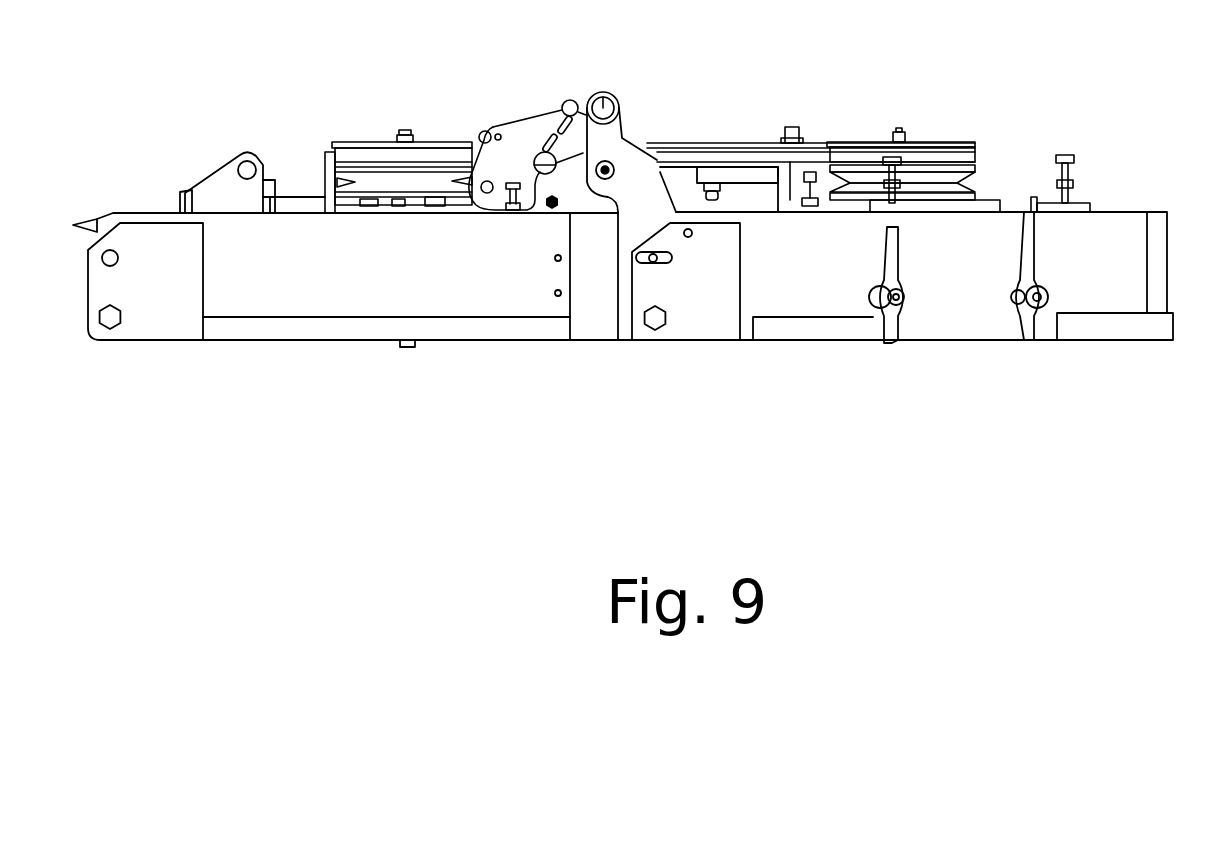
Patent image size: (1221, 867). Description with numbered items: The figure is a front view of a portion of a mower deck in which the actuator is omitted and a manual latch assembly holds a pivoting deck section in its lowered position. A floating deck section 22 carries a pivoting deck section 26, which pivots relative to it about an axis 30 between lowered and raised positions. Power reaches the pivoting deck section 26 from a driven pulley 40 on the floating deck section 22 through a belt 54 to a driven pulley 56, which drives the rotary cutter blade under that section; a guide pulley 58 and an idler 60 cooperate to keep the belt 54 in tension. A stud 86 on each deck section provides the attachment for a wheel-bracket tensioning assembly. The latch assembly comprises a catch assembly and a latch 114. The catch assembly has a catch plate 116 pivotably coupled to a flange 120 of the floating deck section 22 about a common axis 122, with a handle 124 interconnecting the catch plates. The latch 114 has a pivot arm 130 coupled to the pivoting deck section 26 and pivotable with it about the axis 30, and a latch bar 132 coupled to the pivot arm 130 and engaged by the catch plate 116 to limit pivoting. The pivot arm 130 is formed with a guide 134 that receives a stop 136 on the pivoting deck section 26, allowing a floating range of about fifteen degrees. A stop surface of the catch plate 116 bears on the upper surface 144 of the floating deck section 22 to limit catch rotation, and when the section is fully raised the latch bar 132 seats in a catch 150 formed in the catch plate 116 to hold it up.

The floating deck section 22 is at (250, 365).
The pivoting deck section 26 is at (818, 378).
The axis 30 is at (600, 177).
The driven pulley 40 is at (353, 142).
The belt 54 is at (820, 143).
The driven pulley 56 is at (950, 142).
The guide pulley 58 is at (708, 142).
The idler 60 is at (735, 185).
The stud 86 is at (894, 157).
The latch 114 is at (645, 88).
The catch plate 116 is at (525, 123).
The flange 120 is at (538, 199).
The common axis 122 is at (484, 192).
The handle 124 is at (568, 100).
The pivot arm 130 is at (645, 160).
The latch bar 132 is at (608, 93).
The guide 134 is at (623, 278).
The stop 136 is at (663, 263).
The upper surface 144 is at (383, 213).
The catch 150 is at (524, 160).